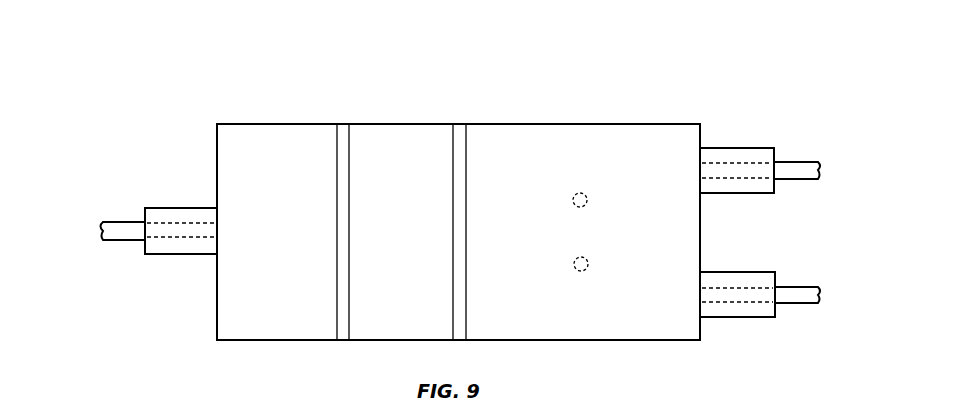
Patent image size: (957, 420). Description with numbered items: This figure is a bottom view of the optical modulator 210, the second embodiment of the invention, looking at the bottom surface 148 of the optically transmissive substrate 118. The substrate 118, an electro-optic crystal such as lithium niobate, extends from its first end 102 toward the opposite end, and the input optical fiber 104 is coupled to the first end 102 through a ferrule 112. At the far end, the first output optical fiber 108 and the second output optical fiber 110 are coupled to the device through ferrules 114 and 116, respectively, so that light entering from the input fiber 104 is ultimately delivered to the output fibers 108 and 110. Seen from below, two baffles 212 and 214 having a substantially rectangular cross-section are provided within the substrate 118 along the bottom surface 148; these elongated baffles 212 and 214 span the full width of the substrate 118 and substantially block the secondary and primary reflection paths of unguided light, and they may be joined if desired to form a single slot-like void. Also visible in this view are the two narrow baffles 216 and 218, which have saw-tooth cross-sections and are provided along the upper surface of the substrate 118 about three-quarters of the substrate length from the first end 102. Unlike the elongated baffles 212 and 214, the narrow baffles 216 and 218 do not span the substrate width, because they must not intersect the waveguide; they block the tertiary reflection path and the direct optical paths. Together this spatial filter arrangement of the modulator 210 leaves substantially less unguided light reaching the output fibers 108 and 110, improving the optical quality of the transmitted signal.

The optical modulator 210 is at (566, 98).
The first end 102 is at (217, 138).
The optically transmissive substrate 118 is at (217, 333).
The bottom surface 148 is at (675, 320).
The baffle 212 is at (346, 124).
The baffle 214 is at (461, 124).
The narrow baffle 216 is at (588, 197).
The narrow baffle 218 is at (589, 262).
The ferrule 112 is at (175, 208).
The input optical fiber 104 is at (119, 222).
The ferrule 116 is at (733, 148).
The second output optical fiber 110 is at (800, 162).
The ferrule 114 is at (733, 318).
The first output optical fiber 108 is at (800, 304).